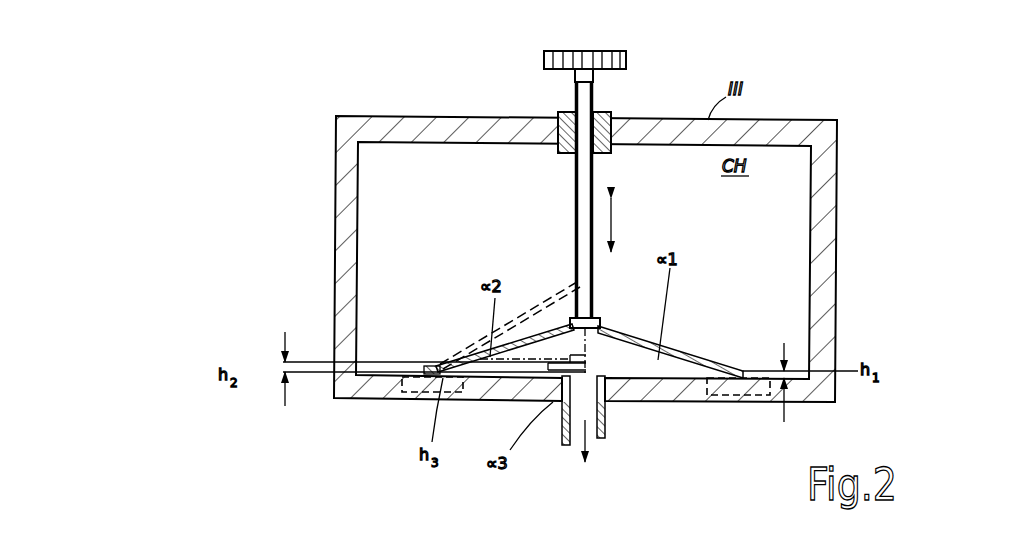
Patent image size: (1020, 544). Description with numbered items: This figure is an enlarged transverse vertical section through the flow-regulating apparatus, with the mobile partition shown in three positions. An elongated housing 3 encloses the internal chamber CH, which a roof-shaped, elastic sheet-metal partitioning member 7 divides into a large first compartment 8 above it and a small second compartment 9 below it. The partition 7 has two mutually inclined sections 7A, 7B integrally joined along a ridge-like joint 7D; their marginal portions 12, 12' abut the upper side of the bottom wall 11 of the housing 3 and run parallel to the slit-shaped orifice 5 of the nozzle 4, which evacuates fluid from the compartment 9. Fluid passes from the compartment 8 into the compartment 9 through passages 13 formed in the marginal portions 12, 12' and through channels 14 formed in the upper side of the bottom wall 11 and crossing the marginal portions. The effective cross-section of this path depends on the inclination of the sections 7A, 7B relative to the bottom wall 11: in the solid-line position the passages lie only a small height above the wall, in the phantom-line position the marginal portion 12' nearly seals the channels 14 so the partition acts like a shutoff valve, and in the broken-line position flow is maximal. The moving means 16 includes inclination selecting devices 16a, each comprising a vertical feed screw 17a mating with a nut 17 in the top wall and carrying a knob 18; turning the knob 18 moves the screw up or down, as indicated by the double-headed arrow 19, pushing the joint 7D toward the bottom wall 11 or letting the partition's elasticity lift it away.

The housing 3 is at (348, 186).
The nozzle 4 is at (562, 436).
The orifice 5 is at (587, 447).
The partitioning member 7 is at (589, 322).
The section 7A is at (657, 350).
The section 7B is at (527, 340).
The ridge-like joint 7D is at (593, 315).
The first compartment 8 is at (492, 155).
The second compartment 9 is at (610, 352).
The bottom wall 11 is at (680, 400).
The marginal portion 12 is at (771, 320).
The second marginal portion 12' is at (482, 325).
The passages 13 is at (447, 362).
The channels 14 is at (413, 380).
The moving means 16 is at (630, 102).
The inclination selecting device 16a is at (597, 49).
The nut 17 is at (552, 155).
The feed screw 17a is at (585, 190).
The knob 18 is at (562, 50).
The double-headed arrow 19 is at (614, 222).